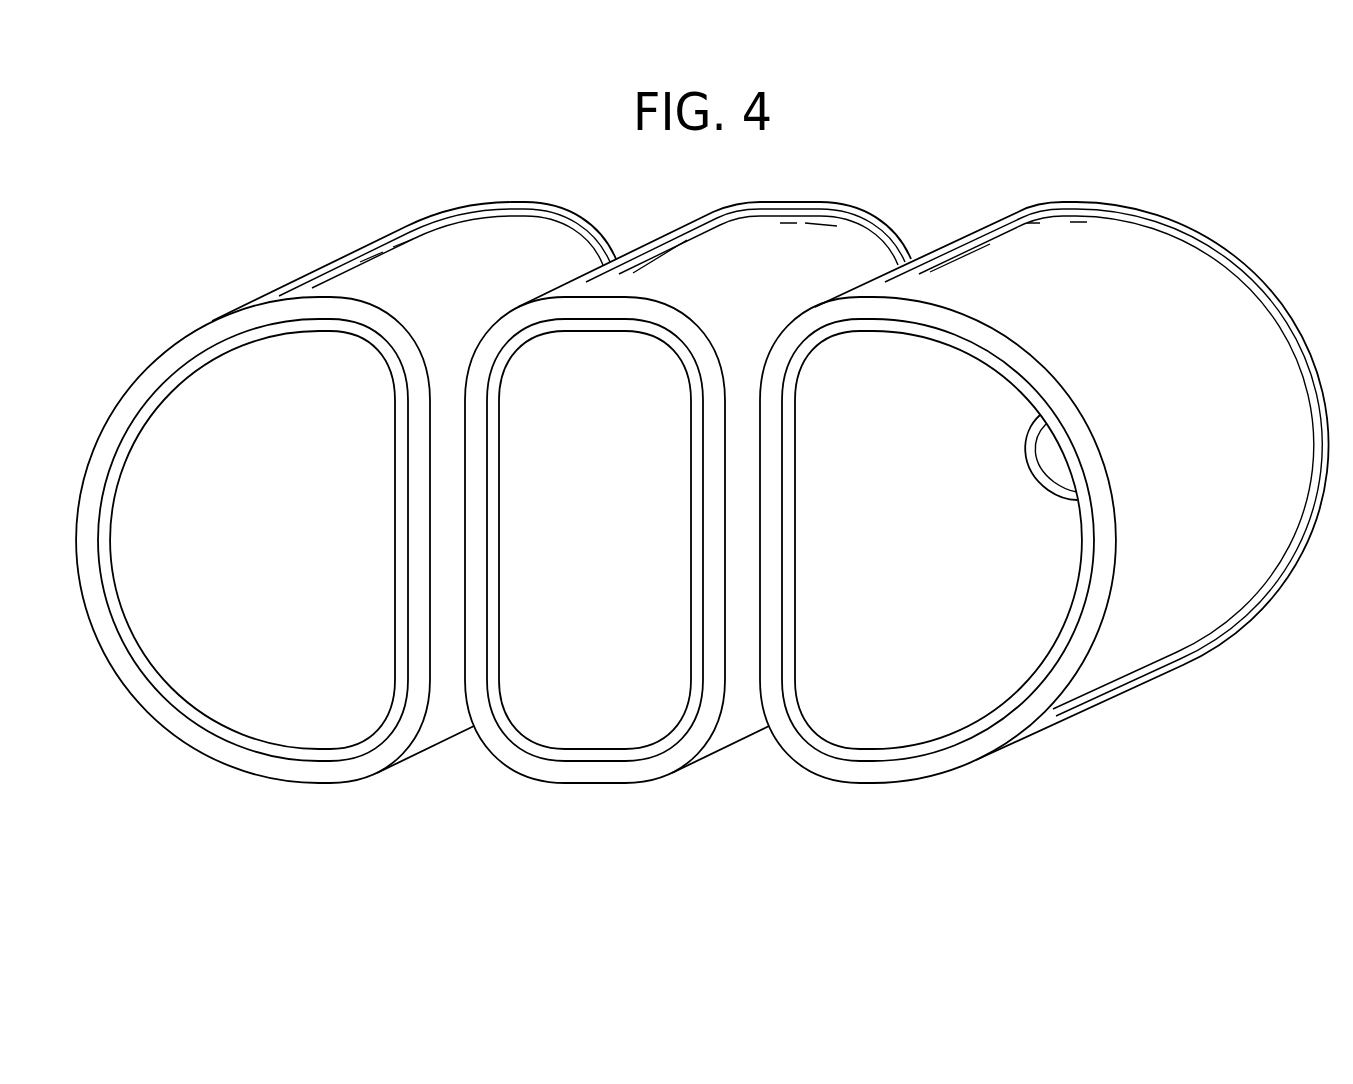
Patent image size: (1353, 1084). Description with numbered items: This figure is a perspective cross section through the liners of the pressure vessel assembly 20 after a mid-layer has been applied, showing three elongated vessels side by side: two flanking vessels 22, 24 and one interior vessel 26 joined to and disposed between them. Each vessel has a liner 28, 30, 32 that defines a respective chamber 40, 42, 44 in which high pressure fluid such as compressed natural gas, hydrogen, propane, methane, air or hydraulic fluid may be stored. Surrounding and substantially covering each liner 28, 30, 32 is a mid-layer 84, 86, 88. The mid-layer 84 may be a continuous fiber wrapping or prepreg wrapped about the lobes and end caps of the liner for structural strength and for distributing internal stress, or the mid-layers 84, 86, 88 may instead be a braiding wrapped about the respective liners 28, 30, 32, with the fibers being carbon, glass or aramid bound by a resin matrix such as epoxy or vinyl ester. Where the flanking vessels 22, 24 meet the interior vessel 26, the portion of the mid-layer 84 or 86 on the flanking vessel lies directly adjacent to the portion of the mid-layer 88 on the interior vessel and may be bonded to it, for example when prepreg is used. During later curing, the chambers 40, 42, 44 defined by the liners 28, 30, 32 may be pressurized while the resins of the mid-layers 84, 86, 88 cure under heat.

The pressure vessel assembly 20 is at (965, 172).
The flanking vessel 22 is at (346, 558).
The flanking vessel 24 is at (1038, 558).
The interior vessel 26 is at (681, 558).
The liner 28 is at (378, 735).
The liner 30 is at (959, 738).
The liner 32 is at (665, 738).
The chamber 40 is at (292, 694).
The chamber 42 is at (910, 694).
The chamber 44 is at (615, 694).
The mid-layer 84 is at (158, 729).
The mid-layer 86 is at (812, 772).
The mid-layer 88 is at (518, 772).